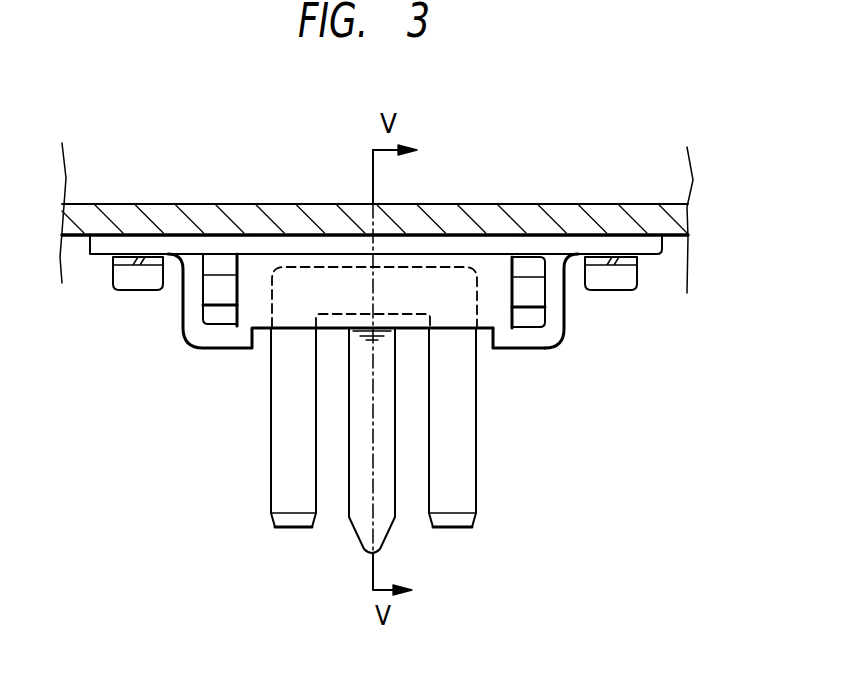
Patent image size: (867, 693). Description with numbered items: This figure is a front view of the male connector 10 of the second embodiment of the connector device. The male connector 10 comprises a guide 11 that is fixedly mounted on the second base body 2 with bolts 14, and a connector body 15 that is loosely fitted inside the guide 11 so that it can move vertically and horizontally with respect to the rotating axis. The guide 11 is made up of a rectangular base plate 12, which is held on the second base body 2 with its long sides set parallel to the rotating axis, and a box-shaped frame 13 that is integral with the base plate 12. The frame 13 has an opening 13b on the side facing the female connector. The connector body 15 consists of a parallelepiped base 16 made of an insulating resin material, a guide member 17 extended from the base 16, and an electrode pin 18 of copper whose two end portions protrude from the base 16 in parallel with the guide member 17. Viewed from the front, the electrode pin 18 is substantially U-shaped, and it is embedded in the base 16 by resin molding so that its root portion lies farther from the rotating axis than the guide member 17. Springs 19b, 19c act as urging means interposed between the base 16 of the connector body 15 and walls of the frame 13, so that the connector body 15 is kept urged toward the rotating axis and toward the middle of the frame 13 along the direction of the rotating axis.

The second base body 2 is at (192, 203).
The male connector 10 is at (619, 503).
The guide 11 is at (562, 351).
The base plate 12 is at (643, 250).
The frame 13 is at (508, 338).
The opening 13b is at (484, 338).
The bolts 14 is at (140, 278).
The connector body 15 is at (248, 395).
The base 16 is at (255, 308).
The guide member 17 is at (378, 518).
The electrode pin 18 is at (457, 492).
The spring 19b is at (218, 290).
The spring 19c is at (532, 294).